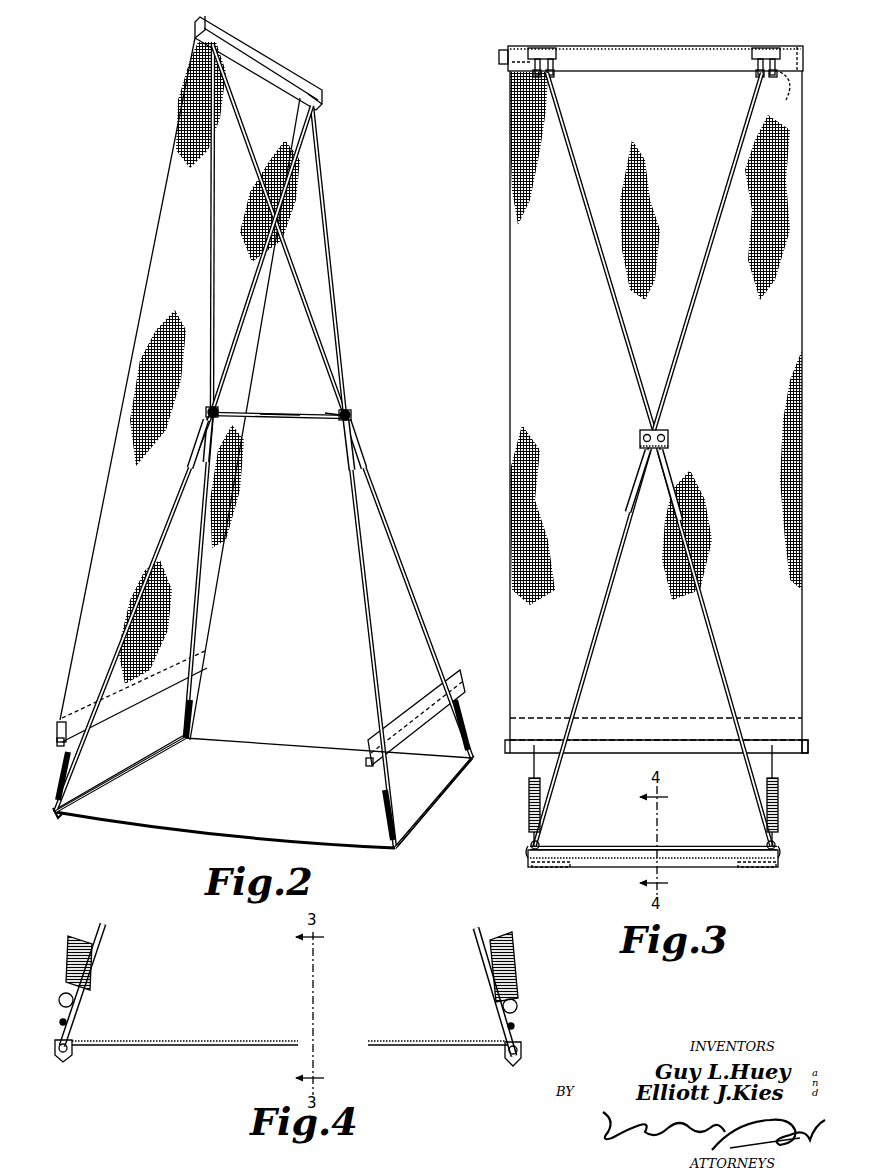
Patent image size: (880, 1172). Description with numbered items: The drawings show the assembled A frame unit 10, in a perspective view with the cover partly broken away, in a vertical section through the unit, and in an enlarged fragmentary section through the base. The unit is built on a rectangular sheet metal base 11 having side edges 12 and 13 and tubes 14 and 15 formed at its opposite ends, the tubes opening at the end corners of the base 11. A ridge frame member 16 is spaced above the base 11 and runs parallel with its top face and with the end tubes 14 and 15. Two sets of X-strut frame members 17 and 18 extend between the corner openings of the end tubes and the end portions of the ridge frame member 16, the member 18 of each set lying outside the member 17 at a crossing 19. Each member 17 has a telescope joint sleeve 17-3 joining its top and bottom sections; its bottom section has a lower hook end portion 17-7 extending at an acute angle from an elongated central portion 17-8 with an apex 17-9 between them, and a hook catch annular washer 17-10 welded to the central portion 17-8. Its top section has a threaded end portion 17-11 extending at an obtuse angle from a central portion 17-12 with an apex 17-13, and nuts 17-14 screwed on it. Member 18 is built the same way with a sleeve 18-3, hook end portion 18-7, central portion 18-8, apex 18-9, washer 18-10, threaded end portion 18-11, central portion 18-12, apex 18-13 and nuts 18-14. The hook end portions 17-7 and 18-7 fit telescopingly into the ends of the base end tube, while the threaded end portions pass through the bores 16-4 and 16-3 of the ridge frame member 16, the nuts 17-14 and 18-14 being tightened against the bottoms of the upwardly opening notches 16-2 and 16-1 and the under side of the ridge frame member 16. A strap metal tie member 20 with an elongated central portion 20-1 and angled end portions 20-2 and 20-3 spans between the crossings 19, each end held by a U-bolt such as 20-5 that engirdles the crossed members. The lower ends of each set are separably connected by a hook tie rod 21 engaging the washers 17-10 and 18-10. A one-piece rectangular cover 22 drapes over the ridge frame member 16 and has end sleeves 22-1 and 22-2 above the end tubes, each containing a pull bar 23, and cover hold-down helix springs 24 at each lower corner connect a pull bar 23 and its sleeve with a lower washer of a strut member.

In FIG. 2, the assembled A frame unit 10 is at (340, 848).
In FIG. 3, the assembled A frame unit 10 is at (762, 870).
In FIG. 4, the assembled A frame unit 10 is at (200, 1047).
In FIG. 2, the rectangular base 11 is at (118, 814).
In FIG. 3, the rectangular base 11 is at (590, 867).
In FIG. 4, the rectangular base 11 is at (410, 1048).
In FIG. 2, the side edge 12 is at (168, 816).
In FIG. 2, the side edge 13 is at (225, 742).
In FIG. 2, the base end tube 14 is at (57, 818).
In FIG. 3, the base end tube 14 is at (714, 868).
In FIG. 4, the base end tube 14 is at (58, 1060).
In FIG. 2, the base end tube 15 is at (440, 800).
In FIG. 4, the base end tube 15 is at (522, 1056).
In FIG. 2, the ridge frame member 16 is at (195, 24).
In FIG. 3, the ridge frame member 16 is at (640, 60).
In FIG. 3, the upwardly opening notch 16-1 is at (499, 56).
In FIG. 3, the upwardly opening notch 16-2 is at (790, 50).
In FIG. 3, the bores 16-3 is at (512, 66).
In FIG. 3, the bores 16-4 is at (781, 90).
In FIG. 2, the X-strut frame member 17 is at (158, 556).
In FIG. 3, the X-strut frame member 17 is at (640, 522).
In FIG. 3, the telescope joint sleeve 17-3 is at (636, 480).
In FIG. 3, the lower hook end portion 17-7 is at (548, 870).
In FIG. 3, the elongated central portion 17-8 is at (575, 688).
In FIG. 3, the apex 17-9 is at (528, 855).
In FIG. 3, the hook catch annular washer 17-10 is at (540, 844).
In FIG. 3, the threaded end portion 17-11 is at (759, 80).
In FIG. 3, the central portion 17-12 is at (730, 190).
In FIG. 3, the apex 17-13 is at (766, 88).
In FIG. 3, the nuts 17-14 is at (757, 70).
In FIG. 2, the X-strut frame member 18 is at (382, 490).
In FIG. 3, the X-strut frame member 18 is at (702, 578).
In FIG. 4, the X-strut frame member 18 is at (106, 940).
In FIG. 3, the telescope joint sleeve 18-3 is at (676, 492).
In FIG. 3, the lower hook end portion 18-7 is at (750, 868).
In FIG. 4, the lower hook end portion 18-7 is at (70, 1062).
In FIG. 3, the elongated central portion 18-8 is at (722, 660).
In FIG. 3, the apex 18-9 is at (778, 856).
In FIG. 3, the hook catch annular washer 18-10 is at (768, 844).
In FIG. 4, the hook catch annular washer 18-10 is at (70, 1030).
In FIG. 3, the threaded end portion 18-11 is at (552, 78).
In FIG. 3, the central portion 18-12 is at (575, 182).
In FIG. 3, the apex 18-13 is at (550, 85).
In FIG. 3, the nuts 18-14 is at (540, 48).
In FIG. 2, the crossing 19 is at (205, 414).
In FIG. 2, the tie member 20 is at (272, 415).
In FIG. 3, the tie member 20 is at (670, 445).
In FIG. 2, the elongated central portion 20-1 is at (300, 420).
In FIG. 3, the elongated central portion 20-1 is at (640, 438).
In FIG. 2, the angled end portion 20-2 is at (222, 408).
In FIG. 3, the angled end portion 20-2 is at (660, 428).
In FIG. 2, the angled end portion 20-3 is at (336, 412).
In FIG. 2, the U-bolt 20-5 is at (352, 410).
In FIG. 2, the hook tie rod 21 is at (130, 768).
In FIG. 3, the hook tie rod 21 is at (683, 846).
In FIG. 4, the hook tie rod 21 is at (60, 1017).
In FIG. 2, the cover 22 is at (126, 366).
In FIG. 3, the cover 22 is at (507, 316).
In FIG. 2, the end sleeve 22-1 is at (60, 720).
In FIG. 2, the end sleeve 22-2 is at (462, 672).
In FIG. 2, the pull bar 23 is at (60, 742).
In FIG. 3, the pull bar 23 is at (804, 760).
In FIG. 2, the cover hold-down helix spring 24 is at (70, 776).
In FIG. 3, the cover hold-down helix spring 24 is at (530, 818).
In FIG. 4, the cover hold-down helix spring 24 is at (85, 972).